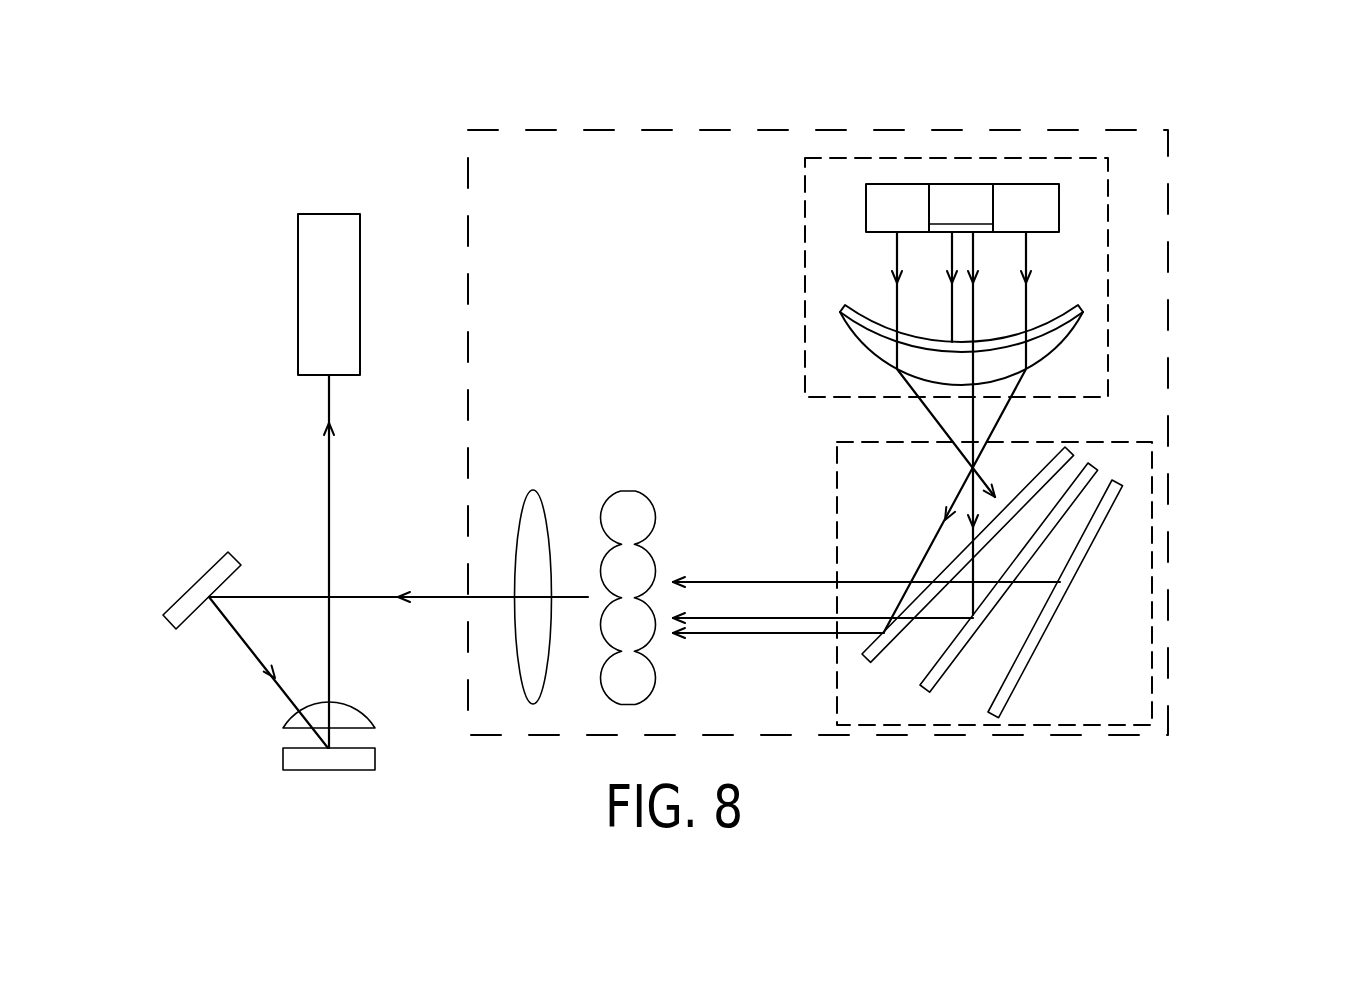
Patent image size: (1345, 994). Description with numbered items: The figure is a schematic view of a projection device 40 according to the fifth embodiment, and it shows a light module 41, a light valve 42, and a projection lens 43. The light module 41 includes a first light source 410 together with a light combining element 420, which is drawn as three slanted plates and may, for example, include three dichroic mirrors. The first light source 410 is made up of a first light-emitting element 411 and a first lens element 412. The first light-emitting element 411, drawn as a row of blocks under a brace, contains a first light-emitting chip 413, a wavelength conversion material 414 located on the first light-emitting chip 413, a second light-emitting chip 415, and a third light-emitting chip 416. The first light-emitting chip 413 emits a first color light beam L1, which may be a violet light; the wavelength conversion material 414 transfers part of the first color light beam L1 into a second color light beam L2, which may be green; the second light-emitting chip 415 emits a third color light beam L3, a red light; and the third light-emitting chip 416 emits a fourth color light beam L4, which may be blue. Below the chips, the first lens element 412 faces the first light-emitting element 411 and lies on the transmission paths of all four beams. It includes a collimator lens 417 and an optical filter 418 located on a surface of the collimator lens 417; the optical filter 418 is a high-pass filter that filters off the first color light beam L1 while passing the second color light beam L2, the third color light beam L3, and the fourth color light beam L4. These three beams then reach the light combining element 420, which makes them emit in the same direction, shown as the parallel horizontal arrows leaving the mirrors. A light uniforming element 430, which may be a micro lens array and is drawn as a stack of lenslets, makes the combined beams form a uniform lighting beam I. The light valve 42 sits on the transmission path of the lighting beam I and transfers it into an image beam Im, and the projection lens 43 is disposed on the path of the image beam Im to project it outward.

The projection device 40 is at (1281, 127).
The light module 41 is at (1168, 255).
The first light source 410 is at (1108, 198).
The first light-emitting element 411 is at (1078, 70).
The first lens element 412 is at (1240, 287).
The first light-emitting chip 413 is at (947, 184).
The wavelength conversion material 414 is at (975, 224).
The second light-emitting chip 415 is at (890, 184).
The third light-emitting chip 416 is at (1022, 184).
The collimator lens 417 is at (995, 380).
The optical filter 418 is at (1083, 307).
The light combining element 420 is at (1152, 562).
The light uniforming element 430 is at (628, 490).
The light valve 42 is at (282, 760).
The projection lens 43 is at (297, 295).
The first color light beam L1 is at (952, 298).
The second color light beam L2 is at (973, 420).
The third color light beam L3 is at (897, 235).
The fourth color light beam L4 is at (997, 423).
The lighting beam I is at (431, 600).
The image beam Im is at (330, 490).